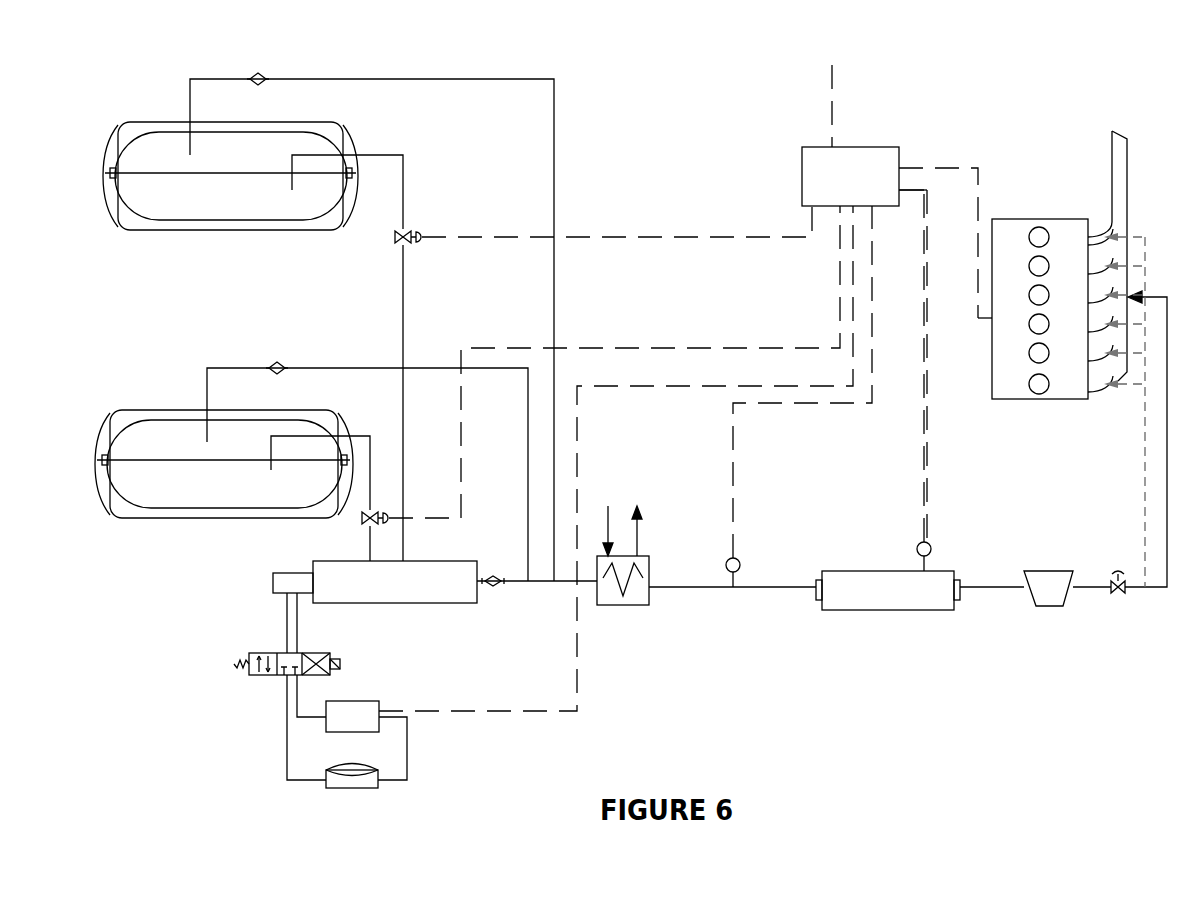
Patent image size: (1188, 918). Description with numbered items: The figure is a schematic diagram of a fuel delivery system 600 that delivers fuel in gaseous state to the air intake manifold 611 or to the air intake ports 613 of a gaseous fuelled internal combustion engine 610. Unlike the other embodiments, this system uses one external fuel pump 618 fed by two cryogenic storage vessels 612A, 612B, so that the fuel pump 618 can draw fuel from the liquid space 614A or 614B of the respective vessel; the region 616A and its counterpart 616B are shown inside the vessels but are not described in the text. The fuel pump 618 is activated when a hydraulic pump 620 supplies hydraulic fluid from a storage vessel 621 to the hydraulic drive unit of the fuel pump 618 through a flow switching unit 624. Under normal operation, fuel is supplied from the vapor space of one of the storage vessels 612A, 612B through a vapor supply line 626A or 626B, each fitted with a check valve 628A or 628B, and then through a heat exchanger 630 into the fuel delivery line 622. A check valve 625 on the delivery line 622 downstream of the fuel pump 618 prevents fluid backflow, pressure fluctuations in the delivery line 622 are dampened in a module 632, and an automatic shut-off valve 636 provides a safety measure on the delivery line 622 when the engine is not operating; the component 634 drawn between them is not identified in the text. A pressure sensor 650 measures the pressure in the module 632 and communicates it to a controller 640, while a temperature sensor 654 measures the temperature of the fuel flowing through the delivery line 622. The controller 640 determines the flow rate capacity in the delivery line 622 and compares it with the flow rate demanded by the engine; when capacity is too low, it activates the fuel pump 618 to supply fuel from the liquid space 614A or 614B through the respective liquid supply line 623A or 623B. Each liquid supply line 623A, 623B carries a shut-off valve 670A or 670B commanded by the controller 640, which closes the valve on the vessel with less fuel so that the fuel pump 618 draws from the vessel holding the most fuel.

The fuel delivery system 600 is at (845, 50).
The gaseous fuelled internal combustion engine 610 is at (1040, 219).
The air intake manifold 611 is at (1121, 175).
The cryogenic storage vessel 612A is at (117, 226).
The cryogenic storage vessel 612B is at (112, 514).
The air intake ports 613 is at (1091, 385).
The liquid space 614A is at (232, 192).
The liquid space 614B is at (202, 490).
The insulating space of first tank 616A is at (222, 146).
The insulating space of second tank 616B is at (233, 432).
The external fuel pump 618 is at (401, 595).
The hydraulic pump 620 is at (362, 700).
The storage vessel 621 is at (348, 787).
The fuel delivery line 622 is at (778, 592).
The liquid supply line 623A is at (403, 185).
The liquid supply line 623B is at (382, 415).
The flow switching unit 624 is at (270, 652).
The check valve 625 is at (496, 575).
The vapor supply line 626A is at (370, 79).
The vapor supply line 626B is at (228, 368).
The check valve 628A is at (259, 73).
The check valve 628B is at (282, 364).
The heat exchanger 630 is at (630, 605).
The module 632 is at (903, 603).
The pressure regulator 634 is at (1052, 598).
The automatic shut-off valve 636 is at (1120, 597).
The controller 640 is at (893, 147).
The pressure sensor 650 is at (916, 546).
The temperature sensor 654 is at (740, 562).
The shut-off valve 670A is at (405, 230).
The shut-off valve 670B is at (378, 515).